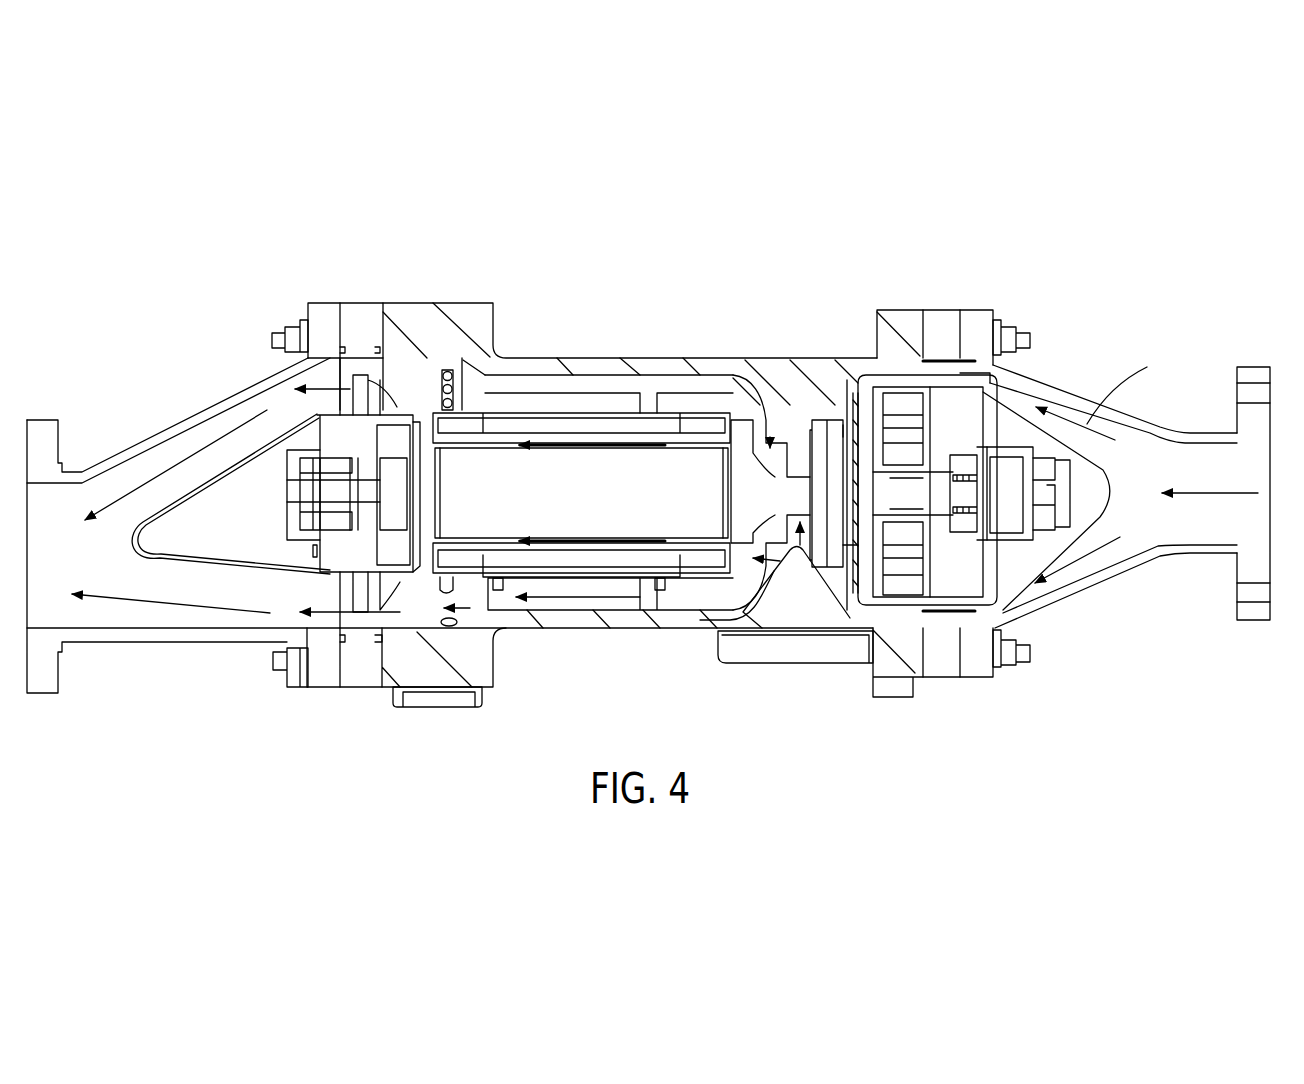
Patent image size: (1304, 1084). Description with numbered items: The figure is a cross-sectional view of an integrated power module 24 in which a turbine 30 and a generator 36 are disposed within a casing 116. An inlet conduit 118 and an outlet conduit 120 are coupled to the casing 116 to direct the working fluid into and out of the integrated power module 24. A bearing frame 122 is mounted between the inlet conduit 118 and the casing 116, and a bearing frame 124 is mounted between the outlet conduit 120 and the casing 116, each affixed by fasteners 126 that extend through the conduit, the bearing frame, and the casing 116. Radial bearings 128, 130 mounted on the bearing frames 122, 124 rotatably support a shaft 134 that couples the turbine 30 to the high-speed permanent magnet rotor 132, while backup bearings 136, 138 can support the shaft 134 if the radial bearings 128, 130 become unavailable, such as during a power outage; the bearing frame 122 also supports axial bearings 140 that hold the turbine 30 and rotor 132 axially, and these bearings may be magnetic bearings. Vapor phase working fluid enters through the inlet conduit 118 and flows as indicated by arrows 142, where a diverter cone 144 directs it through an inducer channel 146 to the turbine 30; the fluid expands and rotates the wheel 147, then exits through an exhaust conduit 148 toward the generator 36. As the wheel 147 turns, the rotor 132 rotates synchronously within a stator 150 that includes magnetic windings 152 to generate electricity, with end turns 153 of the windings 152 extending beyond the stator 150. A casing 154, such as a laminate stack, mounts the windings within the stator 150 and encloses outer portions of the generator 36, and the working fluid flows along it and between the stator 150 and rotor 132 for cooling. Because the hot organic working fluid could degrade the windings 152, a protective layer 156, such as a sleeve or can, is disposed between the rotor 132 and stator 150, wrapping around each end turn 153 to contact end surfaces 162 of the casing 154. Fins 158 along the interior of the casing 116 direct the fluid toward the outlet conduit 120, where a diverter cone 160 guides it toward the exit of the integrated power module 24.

The integrated power module 24 is at (946, 180).
The turbine 30 is at (831, 435).
The generator 36 is at (571, 396).
The casing 116 is at (431, 315).
The inlet conduit 118 is at (1057, 381).
The outlet conduit 120 is at (167, 422).
The bearing frame 122 is at (941, 325).
The bearing frame 124 is at (358, 320).
The fasteners 126 is at (291, 664).
The radial bearing 128 is at (904, 456).
The radial bearing 130 is at (393, 457).
The rotor 132 is at (607, 463).
The shaft 134 is at (812, 617).
The backup bearing 136 is at (967, 527).
The backup bearing 138 is at (318, 545).
The axial bearings 140 is at (914, 403).
The arrows 142 is at (567, 450).
The diverter cone 144 is at (1098, 483).
The inducer channel 146 is at (873, 383).
The wheel 147 is at (844, 540).
The exhaust conduit 148 is at (771, 440).
The stator 150 is at (768, 559).
The magnetic windings 152 is at (557, 553).
The end turns 153 is at (715, 563).
The casing 154 is at (617, 567).
The protective layer 156 is at (717, 563).
The fins 158 is at (693, 407).
The diverter cone 160 is at (160, 557).
The end surfaces 162 is at (663, 567).